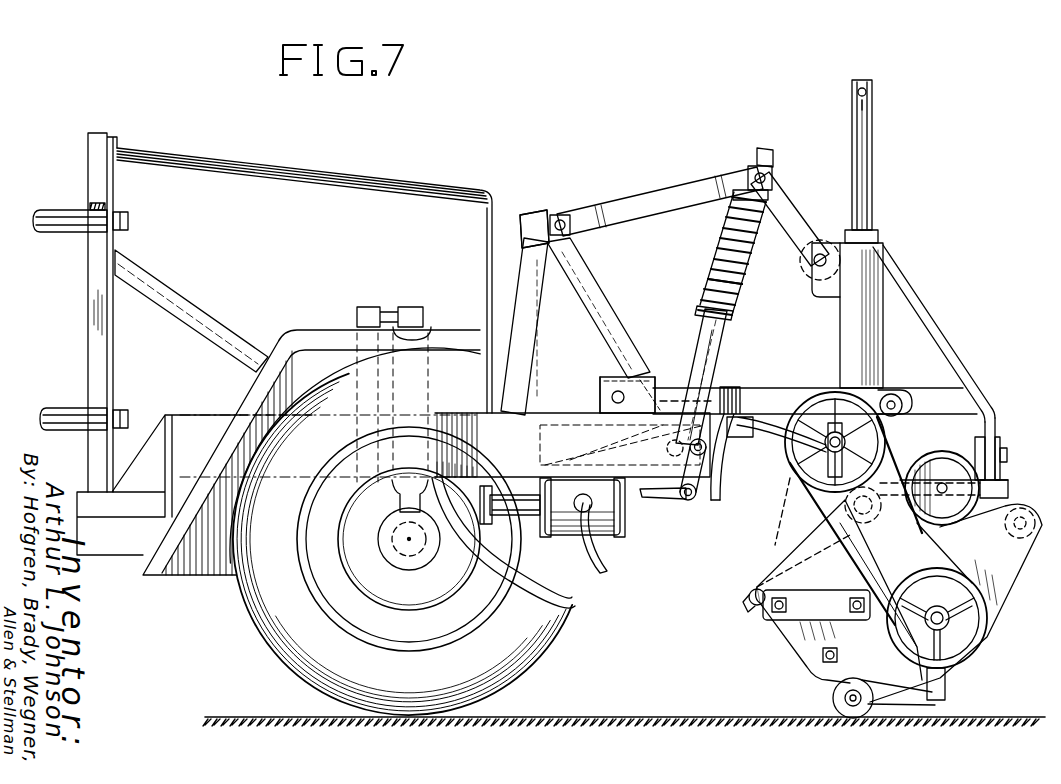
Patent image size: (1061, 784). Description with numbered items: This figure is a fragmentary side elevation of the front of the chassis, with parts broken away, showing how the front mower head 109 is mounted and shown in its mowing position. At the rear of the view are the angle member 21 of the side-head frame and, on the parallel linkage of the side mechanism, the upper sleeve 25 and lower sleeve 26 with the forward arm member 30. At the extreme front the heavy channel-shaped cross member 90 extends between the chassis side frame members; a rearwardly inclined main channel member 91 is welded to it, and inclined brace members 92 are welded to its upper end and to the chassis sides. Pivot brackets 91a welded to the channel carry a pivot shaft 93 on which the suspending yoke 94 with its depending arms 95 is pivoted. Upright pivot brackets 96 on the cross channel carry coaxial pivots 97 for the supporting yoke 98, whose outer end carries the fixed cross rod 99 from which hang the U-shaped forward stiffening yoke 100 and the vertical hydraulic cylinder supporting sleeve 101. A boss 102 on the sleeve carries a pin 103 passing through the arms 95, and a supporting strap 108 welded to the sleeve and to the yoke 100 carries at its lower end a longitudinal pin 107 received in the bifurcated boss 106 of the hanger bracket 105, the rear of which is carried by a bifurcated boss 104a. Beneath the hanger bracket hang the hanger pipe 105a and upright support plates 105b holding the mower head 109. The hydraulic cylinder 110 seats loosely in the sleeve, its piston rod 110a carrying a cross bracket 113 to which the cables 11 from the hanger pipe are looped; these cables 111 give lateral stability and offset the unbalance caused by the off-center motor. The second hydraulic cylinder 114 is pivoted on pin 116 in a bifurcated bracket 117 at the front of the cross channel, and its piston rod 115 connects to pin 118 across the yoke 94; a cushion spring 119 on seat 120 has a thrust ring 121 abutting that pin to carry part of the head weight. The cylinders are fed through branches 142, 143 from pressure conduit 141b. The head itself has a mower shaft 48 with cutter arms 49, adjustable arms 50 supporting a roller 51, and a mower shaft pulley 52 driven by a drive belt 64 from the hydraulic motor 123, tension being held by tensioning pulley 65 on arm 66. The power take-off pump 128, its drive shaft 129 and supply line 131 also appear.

The angle member 21 is at (88, 143).
The forward arm member 30 is at (95, 204).
The upper sleeve 25 is at (55, 232).
The lower sleeve 26 is at (62, 410).
The cables 11 is at (545, 640).
The drive shaft 129 is at (520, 516).
The power take-off pump 128 is at (615, 536).
The supply line 131 is at (608, 570).
The cross member 90 is at (640, 432).
The pin 116 is at (667, 452).
The bifurcated bracket 117 is at (660, 498).
The coaxial pivots 97 is at (612, 396).
The upright pivot brackets 96 is at (655, 382).
The inclined brace members 92 is at (536, 340).
The main channel member 91 is at (597, 300).
The pivot shaft 93 is at (558, 215).
The pivot brackets 91a is at (540, 213).
The suspending yoke 94 is at (632, 196).
The pin 118 is at (755, 166).
The piston rod 115 is at (762, 150).
The depending arms 95 is at (808, 195).
The cushion spring 119 is at (716, 266).
The thrust ring 121 is at (750, 262).
The seat 120 is at (702, 310).
The hydraulic cylinder 114 is at (700, 335).
The pin 103 is at (814, 263).
The boss 102 is at (830, 278).
The branch 143 is at (718, 390).
The supporting yoke 98 is at (773, 388).
The cross rod 99 is at (892, 394).
The forward stiffening yoke 100 is at (945, 395).
The supporting strap 108 is at (930, 328).
The hydraulic cylinder 110 is at (878, 238).
The hydraulic cylinder supporting sleeve 101 is at (884, 252).
The piston rod 110a is at (870, 180).
The rod 111 is at (868, 134).
The cross bracket 113 is at (872, 102).
The bifurcated boss 106 is at (988, 440).
The longitudinal pin 107 is at (1008, 455).
The hanger bracket 105 is at (1008, 485).
The pivotally mounted arm 66 is at (912, 458).
The hydraulic motor 123 is at (735, 445).
The branch 142 is at (735, 470).
The pressure conduit 141b is at (716, 502).
The bifurcated boss 104a is at (845, 508).
The hanger pipe 105a is at (858, 532).
The tensioning pulley 65 is at (975, 525).
The mower head 109 is at (774, 560).
The drive belt 64 is at (839, 591).
The mower shaft 48 is at (937, 618).
The mower shaft pulley 52 is at (990, 640).
The adjustable arms 50 is at (897, 675).
The cutter arms 49 is at (946, 692).
The roller 51 is at (833, 698).
The upright support plates 105b is at (795, 610).